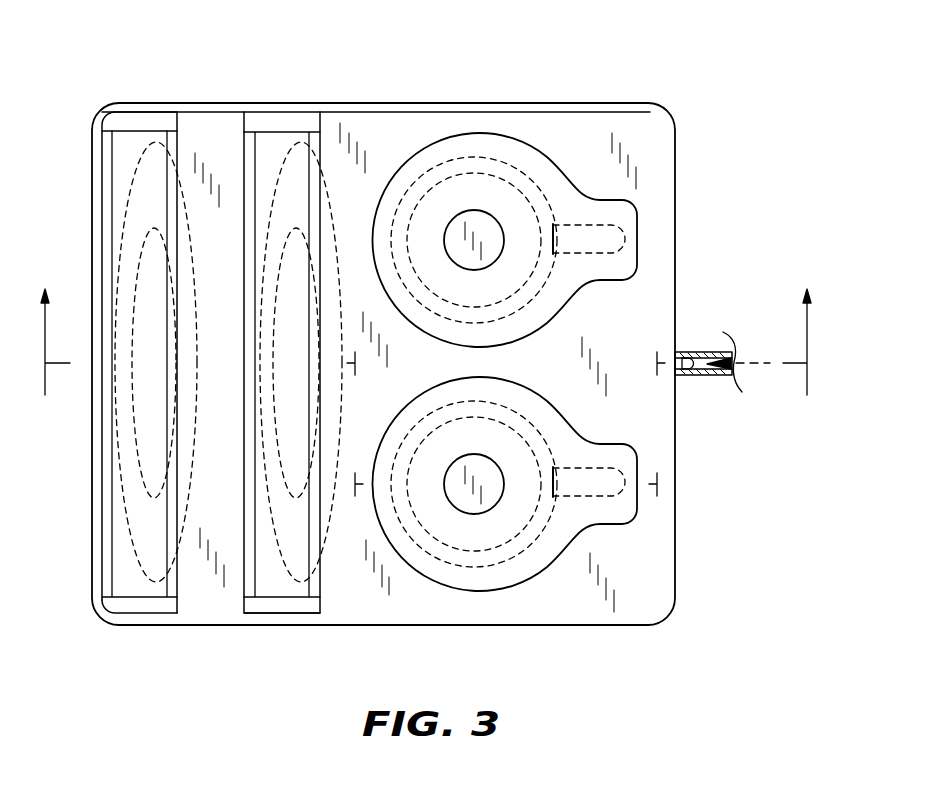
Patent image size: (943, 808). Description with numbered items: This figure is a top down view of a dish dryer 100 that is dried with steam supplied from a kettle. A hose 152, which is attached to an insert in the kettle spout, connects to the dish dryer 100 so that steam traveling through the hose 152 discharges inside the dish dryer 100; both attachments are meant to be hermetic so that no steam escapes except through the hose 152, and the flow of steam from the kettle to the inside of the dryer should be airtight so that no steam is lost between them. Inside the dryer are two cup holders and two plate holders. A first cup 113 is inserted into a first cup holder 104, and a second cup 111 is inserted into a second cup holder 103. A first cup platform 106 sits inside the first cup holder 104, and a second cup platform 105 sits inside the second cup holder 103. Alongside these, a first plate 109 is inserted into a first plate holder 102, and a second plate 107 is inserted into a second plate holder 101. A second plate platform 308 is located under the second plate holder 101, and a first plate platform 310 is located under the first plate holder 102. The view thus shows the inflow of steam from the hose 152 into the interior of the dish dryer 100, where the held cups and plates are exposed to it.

The dish dryer 100 is at (647, 65).
The second plate holder 101 is at (145, 113).
The first plate holder 102 is at (295, 113).
The second cup holder 103 is at (465, 133).
The first cup holder 104 is at (632, 507).
The second cup platform 105 is at (488, 200).
The first cup platform 106 is at (470, 532).
The second plate 107 is at (150, 150).
The first plate 109 is at (295, 150).
The second cup 111 is at (440, 172).
The first cup 113 is at (512, 548).
The hose 152 is at (708, 350).
The second plate platform 308 is at (125, 153).
The first plate platform 310 is at (282, 587).